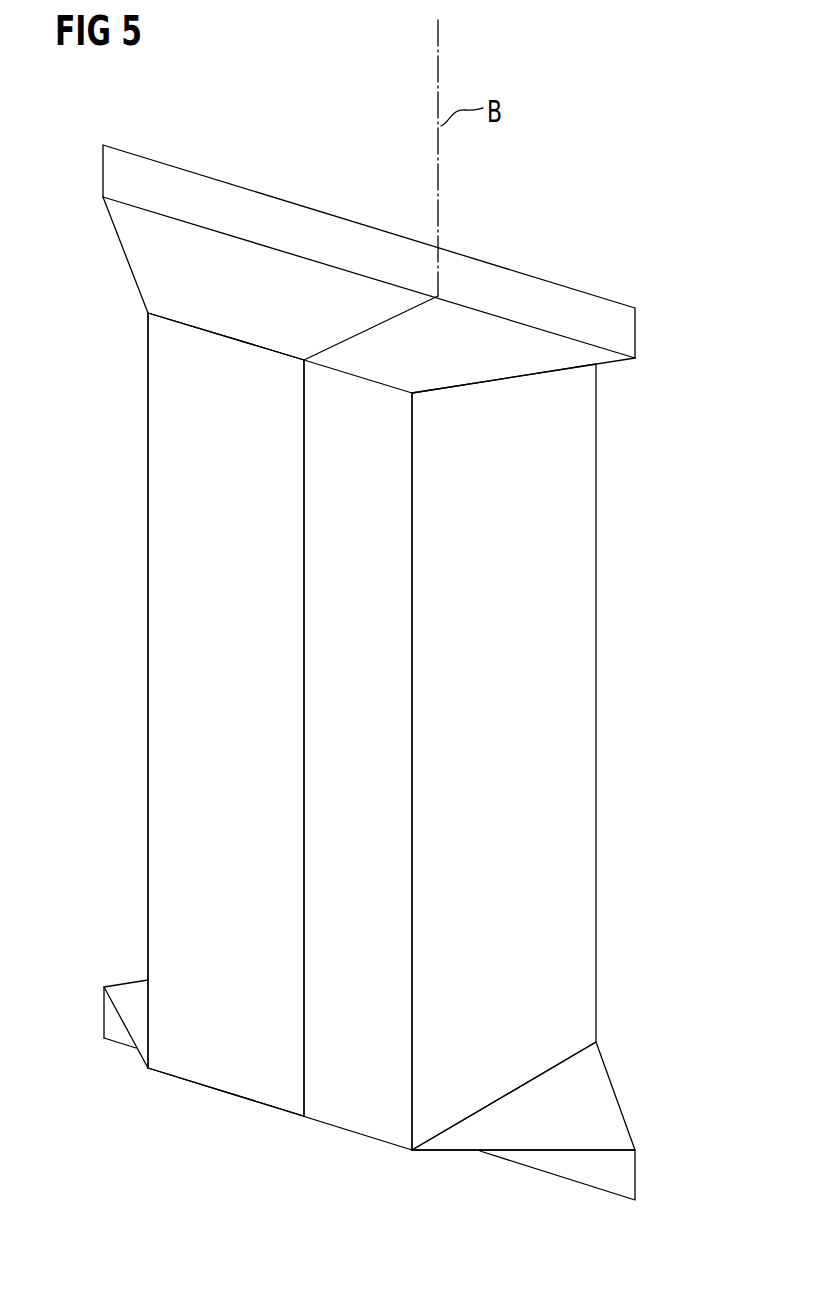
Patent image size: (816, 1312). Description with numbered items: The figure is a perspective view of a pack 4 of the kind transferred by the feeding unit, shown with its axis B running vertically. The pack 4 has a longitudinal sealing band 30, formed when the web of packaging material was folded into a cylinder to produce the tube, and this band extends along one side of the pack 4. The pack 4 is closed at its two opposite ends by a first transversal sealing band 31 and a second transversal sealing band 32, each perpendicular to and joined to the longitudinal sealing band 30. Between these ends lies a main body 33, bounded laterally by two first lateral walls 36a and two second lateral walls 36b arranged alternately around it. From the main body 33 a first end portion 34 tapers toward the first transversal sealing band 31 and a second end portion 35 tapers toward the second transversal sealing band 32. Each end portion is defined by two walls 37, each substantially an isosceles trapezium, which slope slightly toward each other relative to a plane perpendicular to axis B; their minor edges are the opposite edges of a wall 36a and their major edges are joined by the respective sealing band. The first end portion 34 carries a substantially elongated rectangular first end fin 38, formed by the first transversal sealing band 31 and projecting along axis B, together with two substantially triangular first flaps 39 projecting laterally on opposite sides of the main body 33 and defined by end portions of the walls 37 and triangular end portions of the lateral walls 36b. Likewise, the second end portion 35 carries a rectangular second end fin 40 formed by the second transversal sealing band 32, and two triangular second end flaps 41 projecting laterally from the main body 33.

The pack 4 is at (618, 236).
The longitudinal sealing band 30 is at (302, 742).
The first transversal sealing band 31 is at (369, 279).
The second transversal sealing band 32 is at (532, 1200).
The main body 33 is at (167, 600).
The first end portion 34 is at (115, 300).
The second end portion 35 is at (389, 1097).
The first lateral walls 36a is at (166, 795).
The second lateral walls 36b is at (578, 771).
The walls 37 is at (145, 252).
The first end fin 38 is at (507, 288).
The first flaps 39 is at (518, 378).
The second end fin 40 is at (598, 1175).
The second end flaps 41 is at (607, 1122).